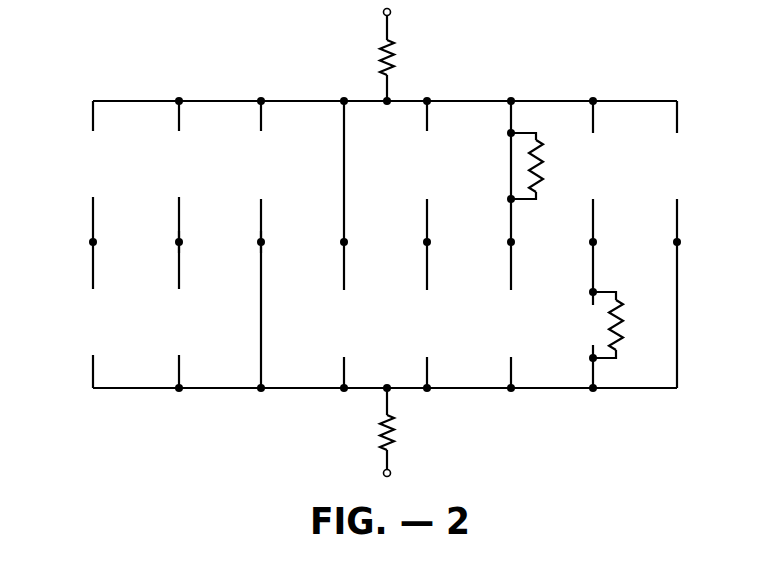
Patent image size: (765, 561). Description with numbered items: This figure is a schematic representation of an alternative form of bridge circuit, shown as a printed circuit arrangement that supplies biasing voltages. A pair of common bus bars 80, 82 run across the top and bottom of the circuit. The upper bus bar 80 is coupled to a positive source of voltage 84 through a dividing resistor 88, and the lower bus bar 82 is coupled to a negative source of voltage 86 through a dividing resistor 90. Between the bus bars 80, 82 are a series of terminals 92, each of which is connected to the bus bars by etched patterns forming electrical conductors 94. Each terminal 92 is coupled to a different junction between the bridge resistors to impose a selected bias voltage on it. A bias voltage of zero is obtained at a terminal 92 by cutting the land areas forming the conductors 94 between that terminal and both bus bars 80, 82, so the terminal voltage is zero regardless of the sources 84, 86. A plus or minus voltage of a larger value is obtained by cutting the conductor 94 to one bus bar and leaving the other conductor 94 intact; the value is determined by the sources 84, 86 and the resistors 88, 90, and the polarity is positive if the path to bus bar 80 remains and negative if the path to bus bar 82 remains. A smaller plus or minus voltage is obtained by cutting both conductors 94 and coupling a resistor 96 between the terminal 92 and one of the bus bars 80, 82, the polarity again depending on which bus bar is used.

The common bus bar 80 is at (545, 101).
The common bus bar 82 is at (528, 389).
The positive source of voltage 84 is at (383, 12).
The negative source of voltage 86 is at (383, 473).
The dividing resistor 88 is at (393, 53).
The dividing resistor 90 is at (393, 430).
The terminal 92 is at (181, 243).
The electrical conductor 94 is at (92, 116).
The resistor 96 is at (541, 168).